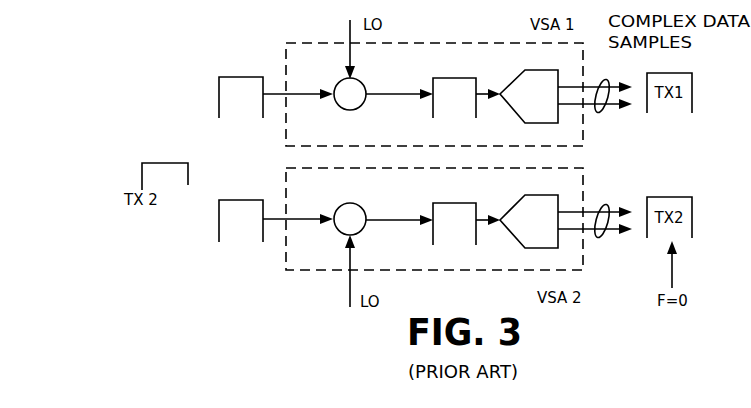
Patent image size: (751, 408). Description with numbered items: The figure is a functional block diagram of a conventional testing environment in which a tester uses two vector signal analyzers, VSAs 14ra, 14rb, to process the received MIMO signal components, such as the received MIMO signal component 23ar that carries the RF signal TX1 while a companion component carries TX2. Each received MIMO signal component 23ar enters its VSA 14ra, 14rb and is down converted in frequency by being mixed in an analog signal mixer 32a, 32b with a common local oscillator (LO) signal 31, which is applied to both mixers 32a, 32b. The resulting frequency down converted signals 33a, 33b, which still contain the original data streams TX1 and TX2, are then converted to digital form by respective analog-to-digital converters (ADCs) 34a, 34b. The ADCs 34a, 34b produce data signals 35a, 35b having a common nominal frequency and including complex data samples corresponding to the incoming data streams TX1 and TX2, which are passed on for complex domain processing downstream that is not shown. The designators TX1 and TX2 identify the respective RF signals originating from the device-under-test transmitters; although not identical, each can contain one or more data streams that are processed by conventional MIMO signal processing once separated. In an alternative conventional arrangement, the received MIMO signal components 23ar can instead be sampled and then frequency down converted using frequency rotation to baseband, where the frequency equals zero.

The common local oscillator signal 31 is at (350, 24).
The first vector signal analyzer 14ra is at (286, 53).
The second vector signal analyzer 14rb is at (286, 264).
The received MIMO signal component 23ar is at (240, 77).
The analog signal mixer 32a is at (363, 86).
The analog signal mixer 32b is at (363, 210).
The frequency down converted signal 33a is at (463, 78).
The frequency down converted signal 33b is at (463, 203).
The analog-to-digital converter 34a is at (513, 81).
The analog-to-digital converter 34b is at (513, 235).
The data signal 35a is at (597, 114).
The data signal 35b is at (604, 205).